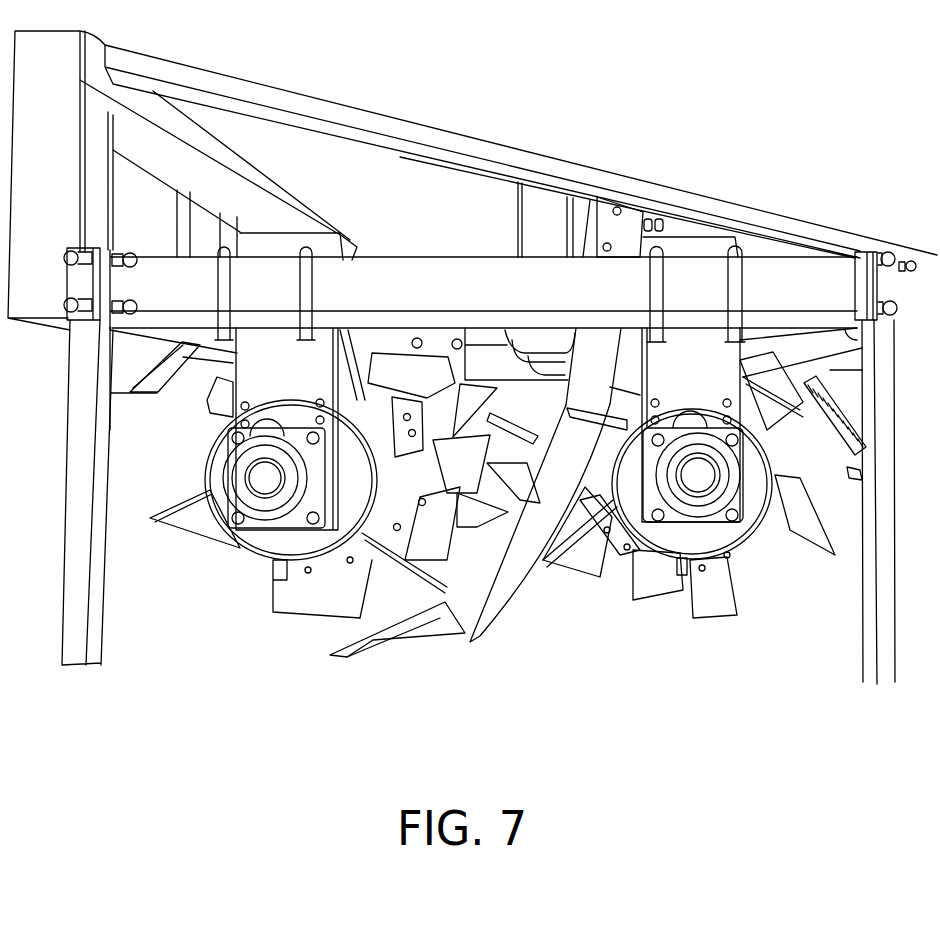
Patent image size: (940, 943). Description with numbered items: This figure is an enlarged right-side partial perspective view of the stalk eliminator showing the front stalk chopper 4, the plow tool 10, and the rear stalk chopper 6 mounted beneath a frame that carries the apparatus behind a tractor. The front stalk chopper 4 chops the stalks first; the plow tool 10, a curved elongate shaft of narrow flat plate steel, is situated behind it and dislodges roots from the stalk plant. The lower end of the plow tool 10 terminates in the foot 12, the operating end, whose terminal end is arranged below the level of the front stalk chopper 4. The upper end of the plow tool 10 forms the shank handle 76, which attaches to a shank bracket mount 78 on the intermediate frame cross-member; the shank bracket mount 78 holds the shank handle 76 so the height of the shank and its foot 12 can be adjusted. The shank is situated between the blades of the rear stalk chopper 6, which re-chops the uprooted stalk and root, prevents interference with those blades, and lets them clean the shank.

The front stalk chopper 4 is at (243, 552).
The rear stalk chopper 6 is at (752, 548).
The plow tool 10 is at (522, 598).
The foot 12 is at (437, 627).
The shank handle 76 is at (597, 350).
The shank bracket mount 78 is at (604, 222).